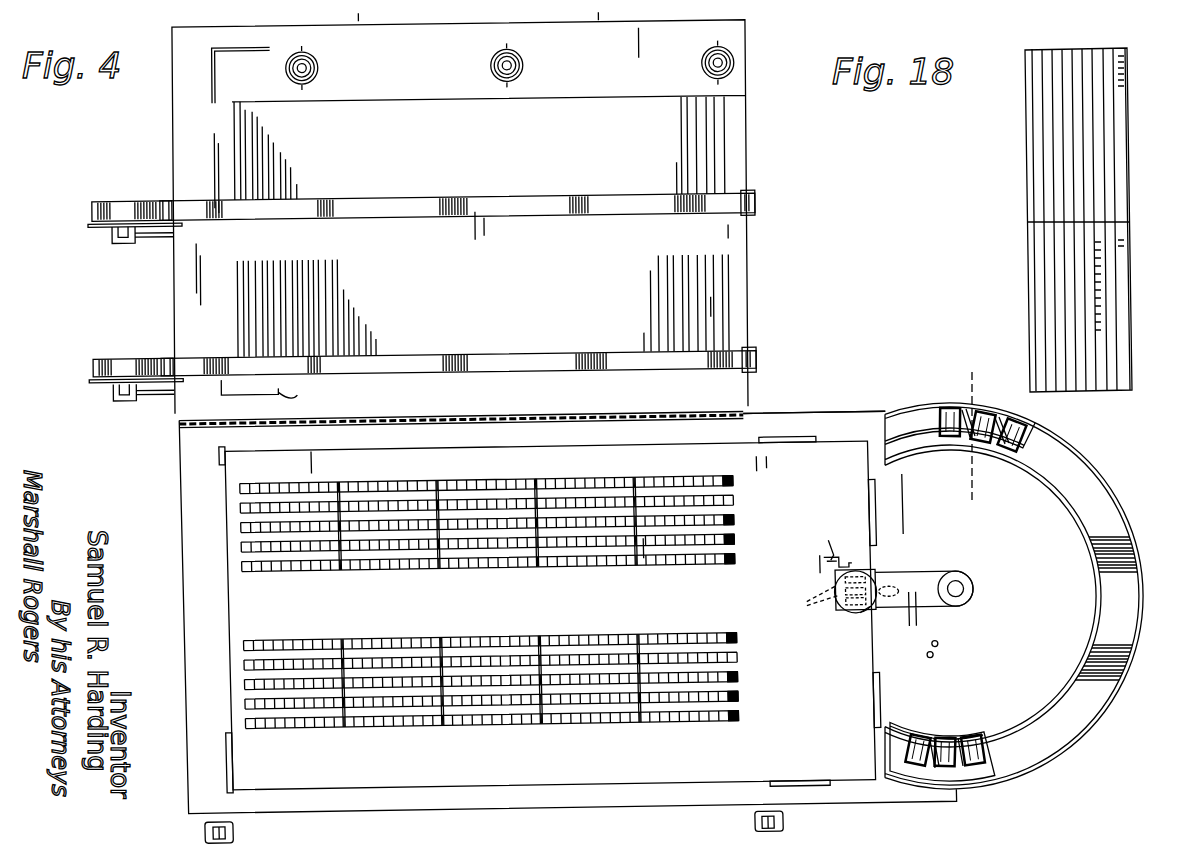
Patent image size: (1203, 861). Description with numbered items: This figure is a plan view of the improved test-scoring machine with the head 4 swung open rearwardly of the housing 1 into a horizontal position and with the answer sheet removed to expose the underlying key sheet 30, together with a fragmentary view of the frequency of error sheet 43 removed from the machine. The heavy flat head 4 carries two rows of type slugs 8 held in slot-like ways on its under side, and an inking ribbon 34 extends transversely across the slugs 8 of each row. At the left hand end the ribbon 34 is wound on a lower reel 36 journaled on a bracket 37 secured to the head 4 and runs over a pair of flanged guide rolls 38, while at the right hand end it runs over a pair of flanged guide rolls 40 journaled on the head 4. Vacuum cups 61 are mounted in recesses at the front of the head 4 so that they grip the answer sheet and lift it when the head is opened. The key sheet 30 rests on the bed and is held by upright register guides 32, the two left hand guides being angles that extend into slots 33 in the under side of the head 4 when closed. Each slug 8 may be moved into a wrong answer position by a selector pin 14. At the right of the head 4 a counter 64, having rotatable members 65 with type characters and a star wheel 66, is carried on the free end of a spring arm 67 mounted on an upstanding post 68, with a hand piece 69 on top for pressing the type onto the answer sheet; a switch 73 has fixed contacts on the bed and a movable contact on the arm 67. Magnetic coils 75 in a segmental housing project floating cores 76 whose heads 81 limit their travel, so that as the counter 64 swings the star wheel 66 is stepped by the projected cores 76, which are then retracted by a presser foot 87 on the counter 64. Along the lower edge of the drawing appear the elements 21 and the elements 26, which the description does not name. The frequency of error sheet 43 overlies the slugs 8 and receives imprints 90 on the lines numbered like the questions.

In FIG. 4, the housing 1 is at (841, 412).
In FIG. 4, the head 4 is at (748, 130).
In FIG. 4, the type slug 8 is at (262, 150).
In FIG. 4, the selector pin 14 is at (1002, 392).
In FIG. 4, the foot 21 is at (200, 828).
In FIG. 4, the base support 26 is at (228, 827).
In FIG. 4, the key sheet 30 is at (567, 610).
In FIG. 4, the register guide 32 is at (790, 418).
In FIG. 4, the slot 33 is at (212, 70).
In FIG. 4, the inking ribbon 34 is at (356, 198).
In FIG. 4, the lower reel 36 is at (97, 198).
In FIG. 4, the bracket 37 is at (125, 240).
In FIG. 4, the flanged guide roll 38 is at (165, 198).
In FIG. 4, the flanged guide roll 40 is at (755, 356).
In FIG. 18, the frequency of error sheet 43 is at (1138, 351).
In FIG. 4, the vacuum cup 61 is at (320, 66).
In FIG. 4, the counter 64 is at (840, 612).
In FIG. 4, the rotatable member 65 is at (811, 599).
In FIG. 4, the star wheel 66 is at (822, 575).
In FIG. 4, the spring arm 67 is at (918, 580).
In FIG. 4, the post 68 is at (966, 582).
In FIG. 4, the hand piece 69 is at (868, 615).
In FIG. 4, the switch 73 is at (895, 577).
In FIG. 4, the magnetic coil 75 is at (945, 410).
In FIG. 4, the floating core 76 is at (978, 445).
In FIG. 4, the head 81 is at (958, 408).
In FIG. 4, the presser foot 87 is at (830, 545).
In FIG. 18, the imprint 90 is at (1105, 282).